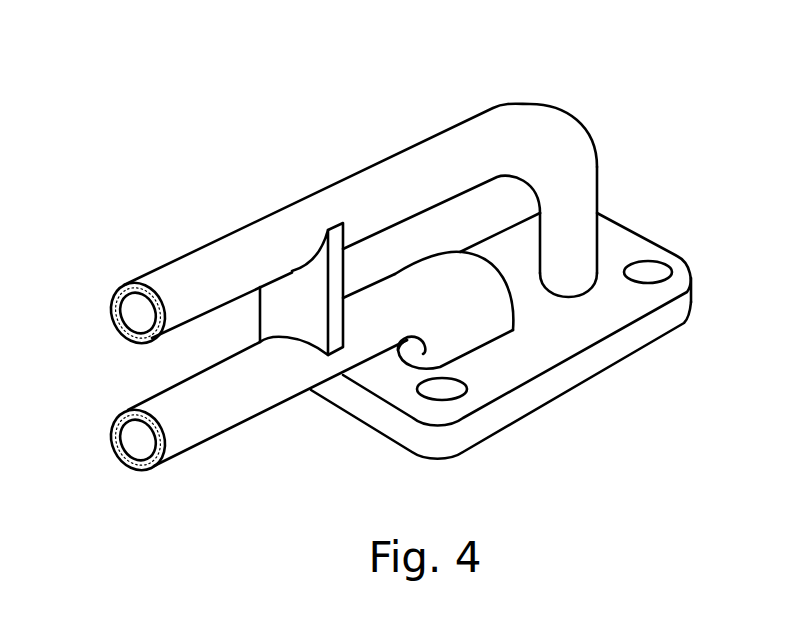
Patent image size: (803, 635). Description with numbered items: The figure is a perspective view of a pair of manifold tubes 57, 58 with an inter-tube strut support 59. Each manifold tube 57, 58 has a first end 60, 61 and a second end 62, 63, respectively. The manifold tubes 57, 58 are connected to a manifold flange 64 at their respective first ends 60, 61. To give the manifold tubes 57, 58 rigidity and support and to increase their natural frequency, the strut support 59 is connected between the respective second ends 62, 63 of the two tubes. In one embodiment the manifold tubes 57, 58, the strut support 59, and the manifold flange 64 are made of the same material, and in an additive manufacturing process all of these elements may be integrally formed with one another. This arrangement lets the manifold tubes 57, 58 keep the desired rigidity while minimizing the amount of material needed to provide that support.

The manifold tube 57 is at (415, 145).
The manifold tube 58 is at (295, 400).
The inter-tube strut support 59 is at (310, 308).
The first end of manifold tube 60 is at (577, 218).
The first end of manifold tube 61 is at (473, 317).
The second end of manifold tube 62 is at (215, 273).
The second end of manifold tube 63 is at (212, 407).
The manifold flange 64 is at (659, 308).